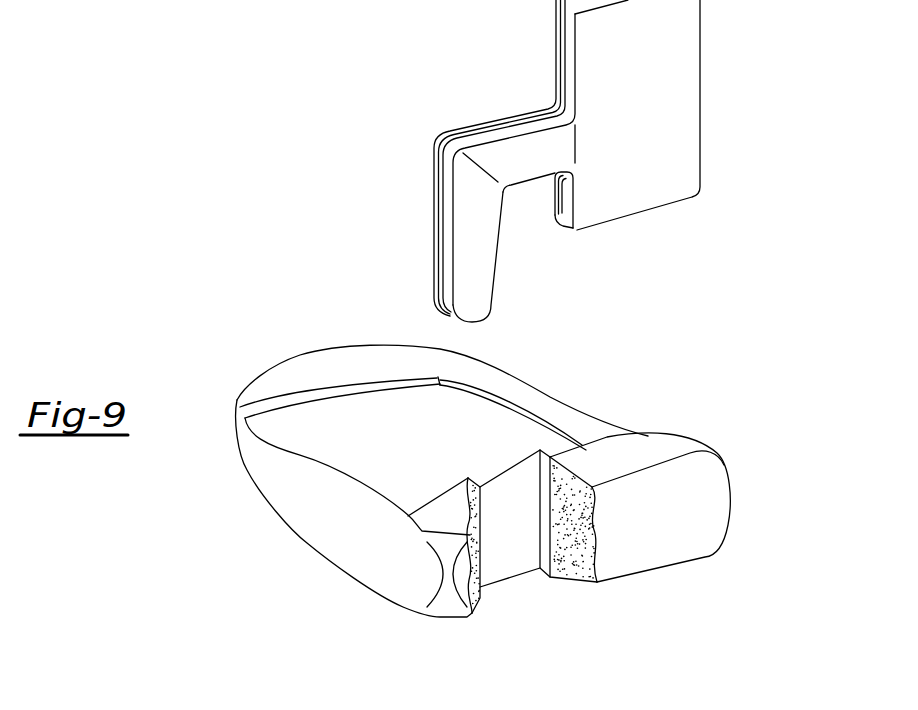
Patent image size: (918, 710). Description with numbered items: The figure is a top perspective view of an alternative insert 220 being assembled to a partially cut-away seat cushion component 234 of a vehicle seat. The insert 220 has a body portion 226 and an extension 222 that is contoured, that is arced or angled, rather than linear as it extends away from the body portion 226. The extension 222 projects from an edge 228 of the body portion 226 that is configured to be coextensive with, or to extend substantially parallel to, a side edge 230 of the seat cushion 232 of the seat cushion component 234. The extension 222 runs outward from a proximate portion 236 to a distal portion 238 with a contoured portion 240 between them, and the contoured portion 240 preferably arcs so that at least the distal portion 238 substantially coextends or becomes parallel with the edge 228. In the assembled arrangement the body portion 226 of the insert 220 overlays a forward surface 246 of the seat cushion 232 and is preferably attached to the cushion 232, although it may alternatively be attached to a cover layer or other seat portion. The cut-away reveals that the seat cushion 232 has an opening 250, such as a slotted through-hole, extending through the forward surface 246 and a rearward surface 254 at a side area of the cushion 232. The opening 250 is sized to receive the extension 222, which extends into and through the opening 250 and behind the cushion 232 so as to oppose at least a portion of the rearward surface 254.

The insert 220 is at (719, 65).
The extension 222 is at (425, 208).
The body portion 226 is at (654, 106).
The edge 228 is at (566, 200).
The side edge 230 is at (610, 462).
The seat cushion 232 is at (707, 508).
The seat cushion component 234 is at (294, 564).
The proximate portion 236 is at (507, 147).
The distal portion 238 is at (470, 265).
The contoured portion 240 is at (465, 167).
The forward surface 246 is at (430, 447).
The opening 250 is at (507, 527).
The rearward surface 254 is at (547, 397).